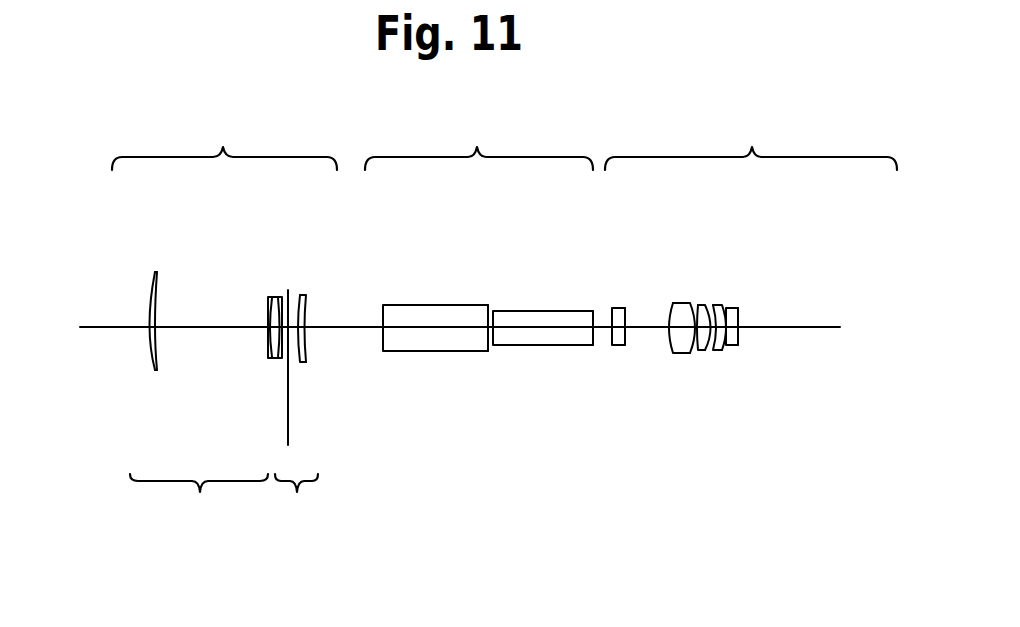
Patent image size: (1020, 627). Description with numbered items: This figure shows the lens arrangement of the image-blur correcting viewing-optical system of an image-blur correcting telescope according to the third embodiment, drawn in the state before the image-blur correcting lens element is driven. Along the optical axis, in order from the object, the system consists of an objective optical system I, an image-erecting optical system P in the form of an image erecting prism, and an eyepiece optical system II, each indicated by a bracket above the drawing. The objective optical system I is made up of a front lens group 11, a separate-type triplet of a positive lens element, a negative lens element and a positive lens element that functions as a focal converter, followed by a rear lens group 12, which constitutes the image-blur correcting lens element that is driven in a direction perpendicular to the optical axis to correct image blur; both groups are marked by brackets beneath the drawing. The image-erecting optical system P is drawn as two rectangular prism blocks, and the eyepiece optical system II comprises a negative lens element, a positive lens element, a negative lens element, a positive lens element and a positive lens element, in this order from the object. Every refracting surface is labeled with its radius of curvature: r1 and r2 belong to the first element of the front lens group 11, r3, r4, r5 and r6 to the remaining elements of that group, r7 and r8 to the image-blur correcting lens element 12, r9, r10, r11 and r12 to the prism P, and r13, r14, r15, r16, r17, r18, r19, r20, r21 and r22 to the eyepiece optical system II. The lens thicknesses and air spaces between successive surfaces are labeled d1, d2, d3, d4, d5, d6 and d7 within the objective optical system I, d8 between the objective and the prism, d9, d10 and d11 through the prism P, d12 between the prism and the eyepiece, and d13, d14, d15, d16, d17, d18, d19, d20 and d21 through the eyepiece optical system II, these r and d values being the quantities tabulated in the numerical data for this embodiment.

The objective optical system I is at (224, 136).
The image-erecting optical system P is at (479, 139).
The eyepiece optical system II is at (751, 139).
The front lens group 11 is at (199, 500).
The rear lens group 12 is at (296, 500).
The radius of curvature r1 is at (155, 275).
The radius of curvature r2 is at (158, 275).
The radius of curvature r3 is at (268, 297).
The radius of curvature r4 is at (276, 298).
The radius of curvature r5 is at (283, 297).
The radius of curvature r6 is at (288, 290).
The radius of curvature r7 is at (300, 295).
The radius of curvature r8 is at (307, 295).
The radius of curvature r9 is at (384, 305).
The radius of curvature r10 is at (488, 305).
The radius of curvature r11 is at (494, 311).
The radius of curvature r12 is at (594, 311).
The radius of curvature r13 is at (614, 308).
The radius of curvature r14 is at (626, 308).
The radius of curvature r15 is at (672, 303).
The radius of curvature r16 is at (693, 303).
The radius of curvature r17 is at (700, 305).
The radius of curvature r18 is at (711, 305).
The radius of curvature r19 is at (716, 305).
The radius of curvature r20 is at (727, 305).
The radius of curvature r21 is at (736, 308).
The radius of curvature r22 is at (740, 310).
The lens thickness or space d1 is at (155, 372).
The lens thickness or space d2 is at (204, 330).
The lens thickness or space d3 is at (269, 358).
The lens thickness or space d4 is at (279, 360).
The lens thickness or space d5 is at (288, 330).
The lens thickness or space d6 is at (296, 364).
The lens thickness or space d7 is at (303, 362).
The lens thickness or space d8 is at (345, 330).
The lens thickness or space d9 is at (437, 351).
The lens thickness or space d10 is at (490, 346).
The lens thickness or space d11 is at (548, 346).
The lens thickness or space d12 is at (603, 330).
The lens thickness or space d13 is at (618, 347).
The lens thickness or space d14 is at (647, 330).
The lens thickness or space d15 is at (683, 354).
The lens thickness or space d16 is at (697, 354).
The lens thickness or space d17 is at (705, 351).
The lens thickness or space d18 is at (713, 351).
The lens thickness or space d19 is at (722, 349).
The lens thickness or space d20 is at (729, 346).
The lens thickness or space d21 is at (738, 340).